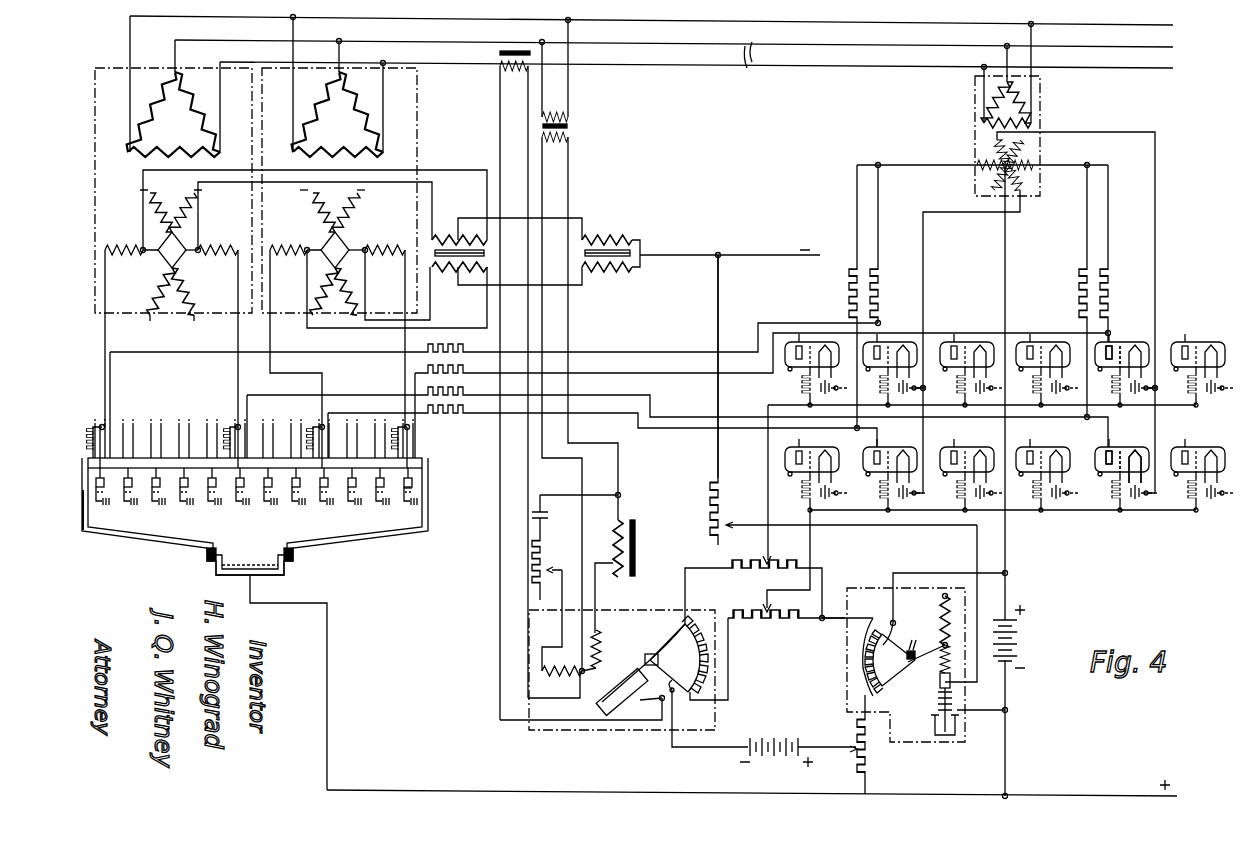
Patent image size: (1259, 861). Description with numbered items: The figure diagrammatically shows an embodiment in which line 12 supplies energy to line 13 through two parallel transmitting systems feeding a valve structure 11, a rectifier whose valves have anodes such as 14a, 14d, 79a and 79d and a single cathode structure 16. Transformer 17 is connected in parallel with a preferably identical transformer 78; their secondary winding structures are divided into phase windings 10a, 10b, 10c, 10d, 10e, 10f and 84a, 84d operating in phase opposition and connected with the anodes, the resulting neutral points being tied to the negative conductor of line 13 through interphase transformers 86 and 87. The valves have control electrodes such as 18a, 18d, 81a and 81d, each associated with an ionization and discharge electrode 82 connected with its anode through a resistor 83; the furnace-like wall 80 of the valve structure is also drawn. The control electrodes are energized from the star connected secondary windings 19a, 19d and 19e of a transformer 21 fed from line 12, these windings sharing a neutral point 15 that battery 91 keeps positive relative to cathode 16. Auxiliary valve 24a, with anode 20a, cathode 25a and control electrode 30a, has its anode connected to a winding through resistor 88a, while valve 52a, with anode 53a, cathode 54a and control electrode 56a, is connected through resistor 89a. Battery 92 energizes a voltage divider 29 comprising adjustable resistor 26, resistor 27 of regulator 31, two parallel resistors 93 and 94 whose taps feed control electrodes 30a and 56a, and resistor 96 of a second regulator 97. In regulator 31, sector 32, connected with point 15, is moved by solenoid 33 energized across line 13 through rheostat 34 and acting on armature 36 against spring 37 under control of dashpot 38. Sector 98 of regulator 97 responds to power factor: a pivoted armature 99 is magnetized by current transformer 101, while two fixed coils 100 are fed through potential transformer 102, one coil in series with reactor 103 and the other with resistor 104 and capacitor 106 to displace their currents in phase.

The valve structure 11 is at (350, 540).
The line 12 is at (651, 84).
The line 13 is at (760, 256).
The anode 14a is at (416, 484).
The anode 14d is at (320, 494).
The neutral point 15 is at (982, 461).
The cathode structure 16 is at (238, 576).
The transformer 17 is at (414, 102).
The control electrode 18a is at (412, 496).
The control electrode 18d is at (348, 494).
The secondary winding 19a is at (1037, 162).
The secondary winding 19d is at (972, 162).
The secondary winding 19e is at (993, 144).
The anode 20a is at (1112, 342).
The transformer 21 is at (1040, 102).
The auxiliary valve 24a is at (1127, 344).
The cathode 25a is at (1140, 350).
The adjustable resistor 26 is at (872, 764).
The resistor 27 is at (844, 676).
The voltage divider 29 is at (828, 624).
The control electrode 30a is at (1120, 370).
The regulator 31 is at (866, 582).
The sector 32 is at (914, 642).
The solenoid 33 is at (938, 696).
The adjusting rheostat 34 is at (710, 504).
The armature 36 is at (938, 676).
The spring 37 is at (940, 610).
The dashpot 38 is at (936, 720).
The valve 52a is at (1124, 446).
The anode 53a is at (1106, 448).
The cathode 54a is at (1138, 454).
The control electrode 56a is at (1114, 476).
The transformer 78 is at (112, 66).
The anode 79a is at (236, 494).
The anode 79d is at (98, 510).
The furnace wall 80 is at (114, 564).
The control electrode 81a is at (268, 494).
The control electrode 81d is at (128, 500).
The ionization and discharge electrode 82 is at (242, 500).
The resistor 83 is at (230, 424).
The phase winding 84a is at (208, 244).
The phase winding 84d is at (122, 244).
The interphase transformer 86 is at (486, 254).
The interphase transformer 87 is at (634, 244).
The resistor 88a is at (1110, 280).
The resistor 89a is at (1080, 284).
The battery 91 is at (1018, 646).
The battery 92 is at (772, 738).
The resistor 93 is at (747, 562).
The resistor 94 is at (776, 628).
The resistor 96 is at (686, 694).
The regulator 97 is at (607, 682).
The sector 98 is at (676, 640).
The armature 99 is at (618, 700).
The fixed coils 100 is at (610, 625).
The current transformer 101 is at (496, 52).
The potential transformer 102 is at (570, 126).
The reactor 103 is at (640, 528).
The resistor 104 is at (546, 542).
The capacitor 106 is at (546, 518).
The phase winding 10a is at (377, 325).
The phase winding 10b is at (358, 294).
The phase winding 10c is at (304, 291).
The phase winding 10d is at (296, 325).
The phase winding 10e is at (306, 200).
The phase winding 10f is at (360, 200).